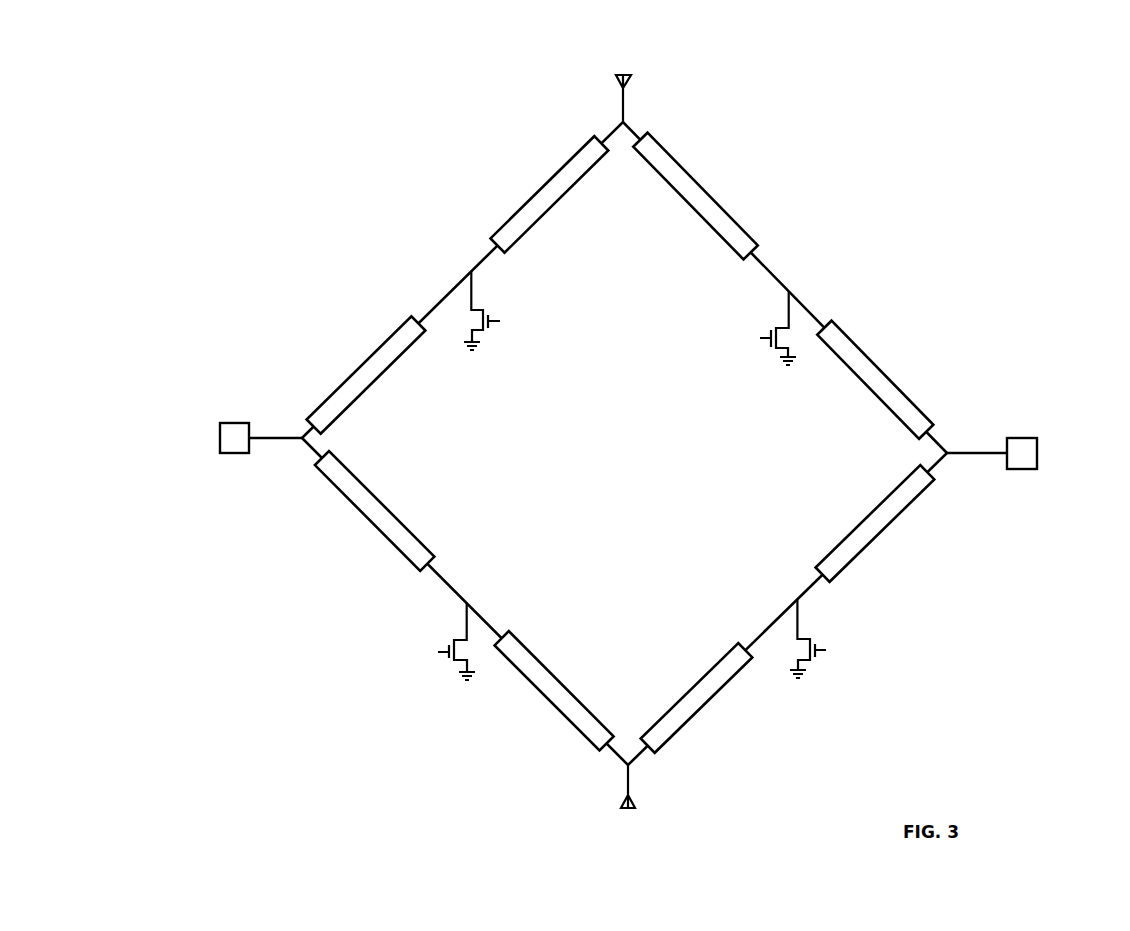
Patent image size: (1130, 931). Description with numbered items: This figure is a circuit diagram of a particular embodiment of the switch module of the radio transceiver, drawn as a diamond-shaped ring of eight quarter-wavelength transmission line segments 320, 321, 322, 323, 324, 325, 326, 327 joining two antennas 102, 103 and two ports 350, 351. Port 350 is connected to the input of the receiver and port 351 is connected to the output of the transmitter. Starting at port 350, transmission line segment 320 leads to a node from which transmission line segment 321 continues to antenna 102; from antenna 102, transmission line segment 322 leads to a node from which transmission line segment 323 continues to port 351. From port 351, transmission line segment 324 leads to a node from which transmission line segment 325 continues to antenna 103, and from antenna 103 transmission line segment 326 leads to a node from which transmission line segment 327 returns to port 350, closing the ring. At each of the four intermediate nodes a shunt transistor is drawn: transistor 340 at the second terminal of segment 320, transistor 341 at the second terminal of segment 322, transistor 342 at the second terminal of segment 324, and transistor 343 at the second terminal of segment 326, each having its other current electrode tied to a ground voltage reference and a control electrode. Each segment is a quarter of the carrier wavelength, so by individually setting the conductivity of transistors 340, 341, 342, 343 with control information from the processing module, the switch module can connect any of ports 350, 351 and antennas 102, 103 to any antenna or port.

The antenna 102 is at (629, 74).
The antenna 103 is at (620, 810).
The transmission line segment 320 is at (382, 343).
The transmission line segment 321 is at (527, 196).
The transmission line segment 322 is at (713, 212).
The transmission line segment 323 is at (850, 332).
The transmission line segment 324 is at (900, 517).
The transmission line segment 325 is at (723, 695).
The transmission line segment 326 is at (527, 678).
The transmission line segment 327 is at (355, 505).
The transistor 340 is at (498, 303).
The transistor 341 is at (770, 320).
The transistor 342 is at (808, 665).
The transistor 343 is at (452, 633).
The port 350 is at (230, 442).
The port 351 is at (1032, 435).